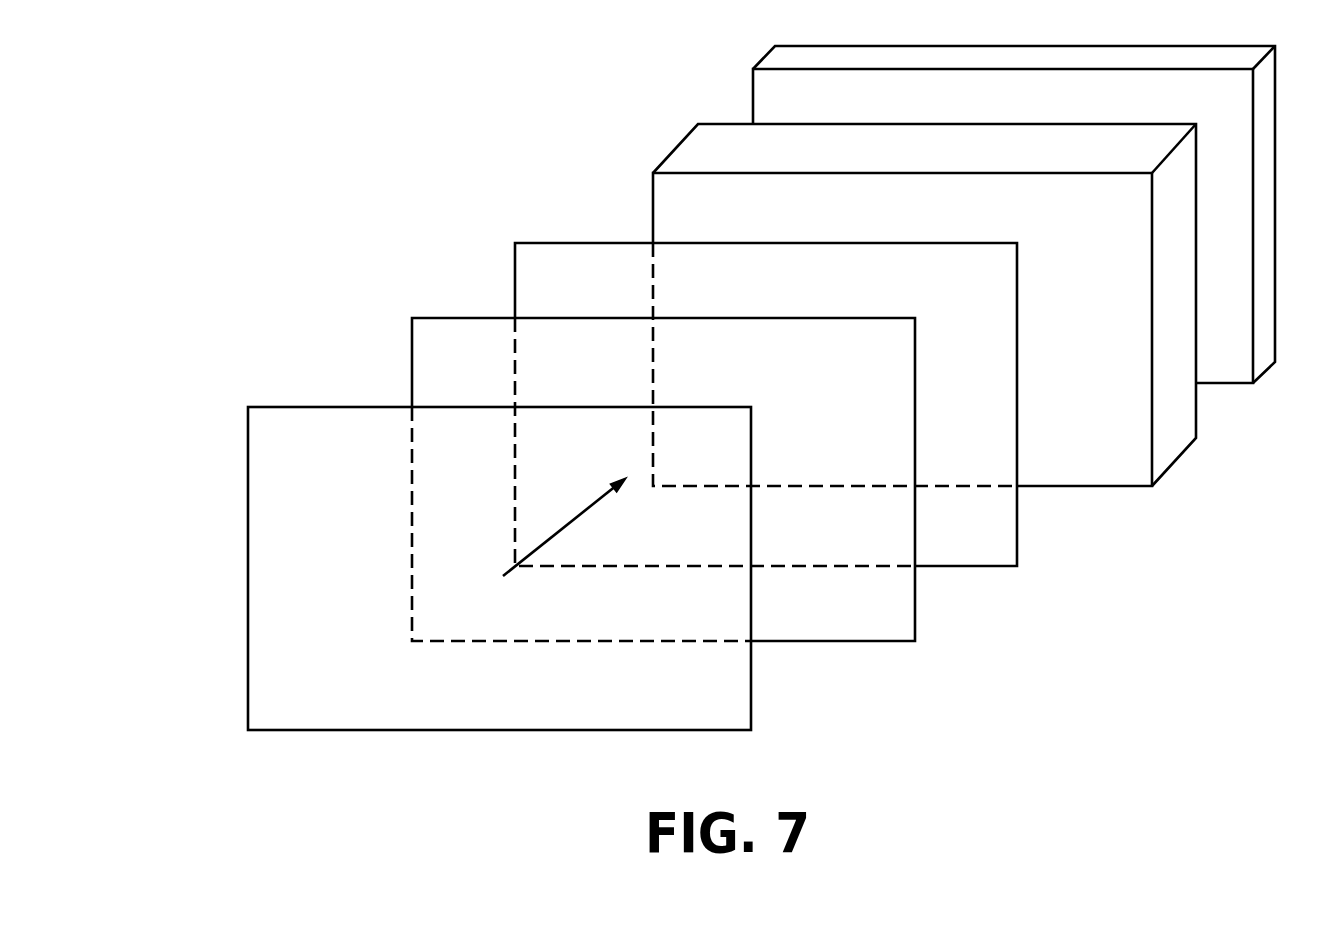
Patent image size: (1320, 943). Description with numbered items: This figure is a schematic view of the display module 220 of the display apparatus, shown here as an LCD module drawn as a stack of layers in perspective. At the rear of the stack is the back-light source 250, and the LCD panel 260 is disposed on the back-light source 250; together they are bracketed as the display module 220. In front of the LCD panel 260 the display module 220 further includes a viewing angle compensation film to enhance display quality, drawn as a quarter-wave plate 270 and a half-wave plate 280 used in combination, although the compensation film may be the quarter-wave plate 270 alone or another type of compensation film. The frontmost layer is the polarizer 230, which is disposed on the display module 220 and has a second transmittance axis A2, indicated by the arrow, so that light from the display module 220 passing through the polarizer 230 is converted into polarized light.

The display module 220 is at (533, 87).
The back-light source 250 is at (772, 100).
The LCD panel 260 is at (663, 213).
The quarter-wave plate 270 is at (540, 278).
The half-wave plate 280 is at (437, 352).
The polarizer 230 is at (273, 443).
The second transmittance axis A2 is at (564, 527).